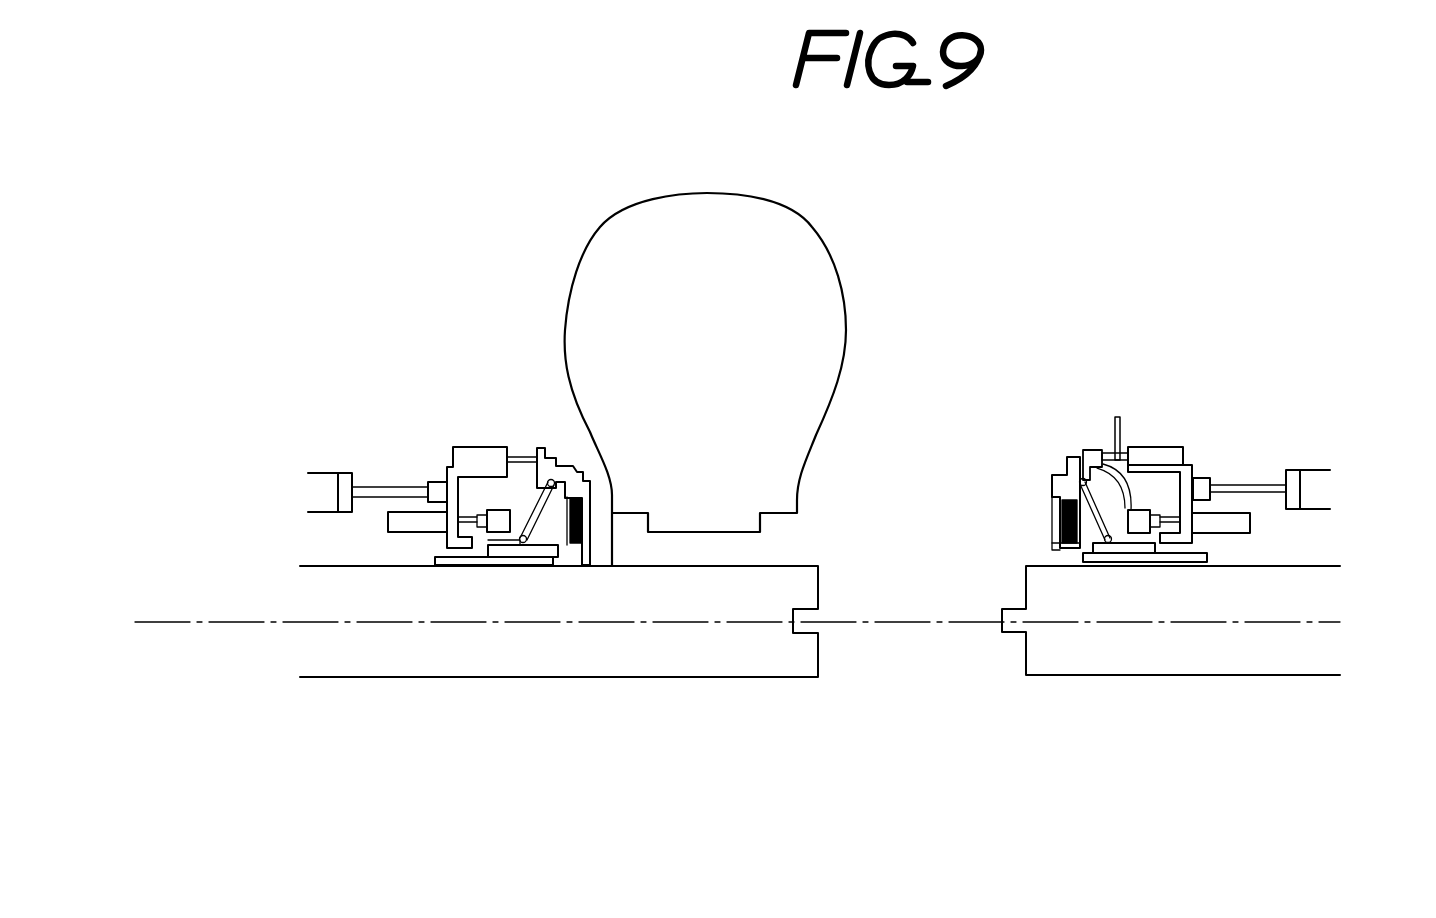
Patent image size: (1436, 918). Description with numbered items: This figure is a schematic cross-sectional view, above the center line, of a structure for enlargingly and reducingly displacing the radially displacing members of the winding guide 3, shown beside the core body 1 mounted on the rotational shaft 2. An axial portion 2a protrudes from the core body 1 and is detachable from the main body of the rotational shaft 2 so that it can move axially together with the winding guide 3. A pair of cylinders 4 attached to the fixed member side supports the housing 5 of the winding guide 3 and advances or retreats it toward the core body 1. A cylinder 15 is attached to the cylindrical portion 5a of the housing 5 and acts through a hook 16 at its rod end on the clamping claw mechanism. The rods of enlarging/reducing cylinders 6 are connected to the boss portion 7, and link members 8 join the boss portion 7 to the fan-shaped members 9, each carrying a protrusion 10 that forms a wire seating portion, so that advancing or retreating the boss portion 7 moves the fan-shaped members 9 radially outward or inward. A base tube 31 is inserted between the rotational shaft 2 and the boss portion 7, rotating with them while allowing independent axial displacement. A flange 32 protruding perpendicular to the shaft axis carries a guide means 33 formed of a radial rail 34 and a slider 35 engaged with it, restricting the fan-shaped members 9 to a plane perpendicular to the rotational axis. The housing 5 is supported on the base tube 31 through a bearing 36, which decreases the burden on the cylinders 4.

The core body 1 is at (817, 232).
The rotational shaft 2 is at (475, 682).
The axial portion 2a is at (1163, 658).
The winding guide 3 is at (545, 418).
The cylinders 4 is at (1318, 470).
The housing 5 is at (1254, 511).
The cylindrical portion 5a is at (1160, 460).
The enlarging/reducing cylinders 6 is at (1253, 527).
The boss portion 7 is at (1130, 553).
The link members 8 is at (1140, 490).
The fan-shaped members 9 is at (1045, 445).
The protrusion 10 is at (1057, 477).
The cylinder 15 is at (1150, 452).
The hook 16 is at (1092, 450).
The base tube 31 is at (1087, 588).
The flange 32 is at (1050, 534).
The guide means 33 is at (1038, 546).
The rail 34 is at (1060, 502).
The slider 35 is at (1124, 440).
The bearing 36 is at (1200, 557).